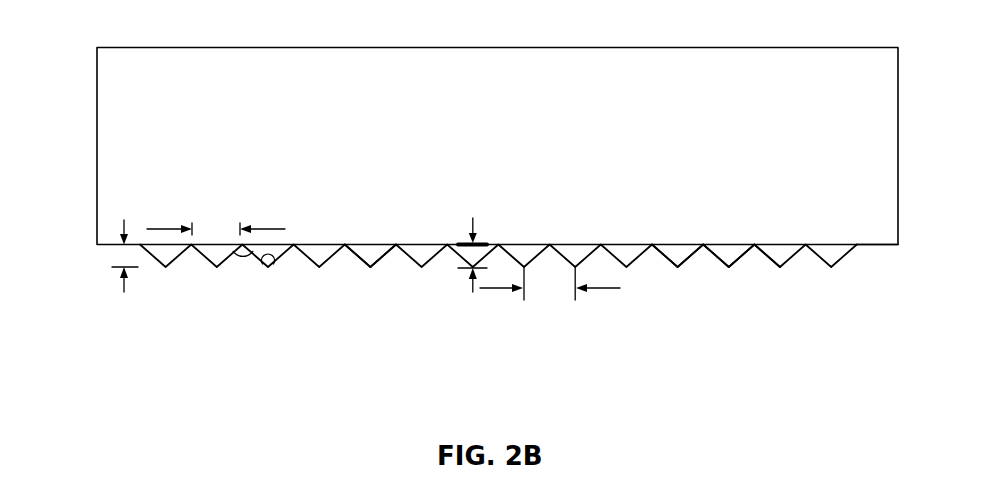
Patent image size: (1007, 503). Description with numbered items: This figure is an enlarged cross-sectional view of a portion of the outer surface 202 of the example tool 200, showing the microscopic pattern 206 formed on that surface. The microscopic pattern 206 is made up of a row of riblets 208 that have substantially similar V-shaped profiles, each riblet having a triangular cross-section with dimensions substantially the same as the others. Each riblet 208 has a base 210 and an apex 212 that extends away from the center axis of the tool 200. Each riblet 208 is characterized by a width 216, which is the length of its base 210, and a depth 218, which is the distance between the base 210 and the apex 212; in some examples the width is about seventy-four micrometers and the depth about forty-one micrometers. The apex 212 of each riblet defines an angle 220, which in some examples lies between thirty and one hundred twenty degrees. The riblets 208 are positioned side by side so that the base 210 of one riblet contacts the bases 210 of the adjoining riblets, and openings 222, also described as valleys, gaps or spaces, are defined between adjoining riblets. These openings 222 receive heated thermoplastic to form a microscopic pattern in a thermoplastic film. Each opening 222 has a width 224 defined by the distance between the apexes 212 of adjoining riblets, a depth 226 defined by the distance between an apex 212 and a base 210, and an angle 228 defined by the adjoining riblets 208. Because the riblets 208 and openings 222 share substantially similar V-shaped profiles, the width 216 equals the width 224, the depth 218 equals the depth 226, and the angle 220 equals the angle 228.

The tool 200 is at (547, 85).
The outer surface 202 is at (804, 284).
The microscopic pattern 206 is at (882, 258).
The riblets 208 is at (778, 268).
The base 210 is at (365, 245).
The apex 212 is at (370, 268).
The width 216 is at (163, 230).
The depth 218 is at (123, 292).
The angle 220 is at (270, 261).
The openings 222 is at (650, 260).
The width 224 is at (483, 291).
The depth 226 is at (472, 218).
The angle 228 is at (240, 260).